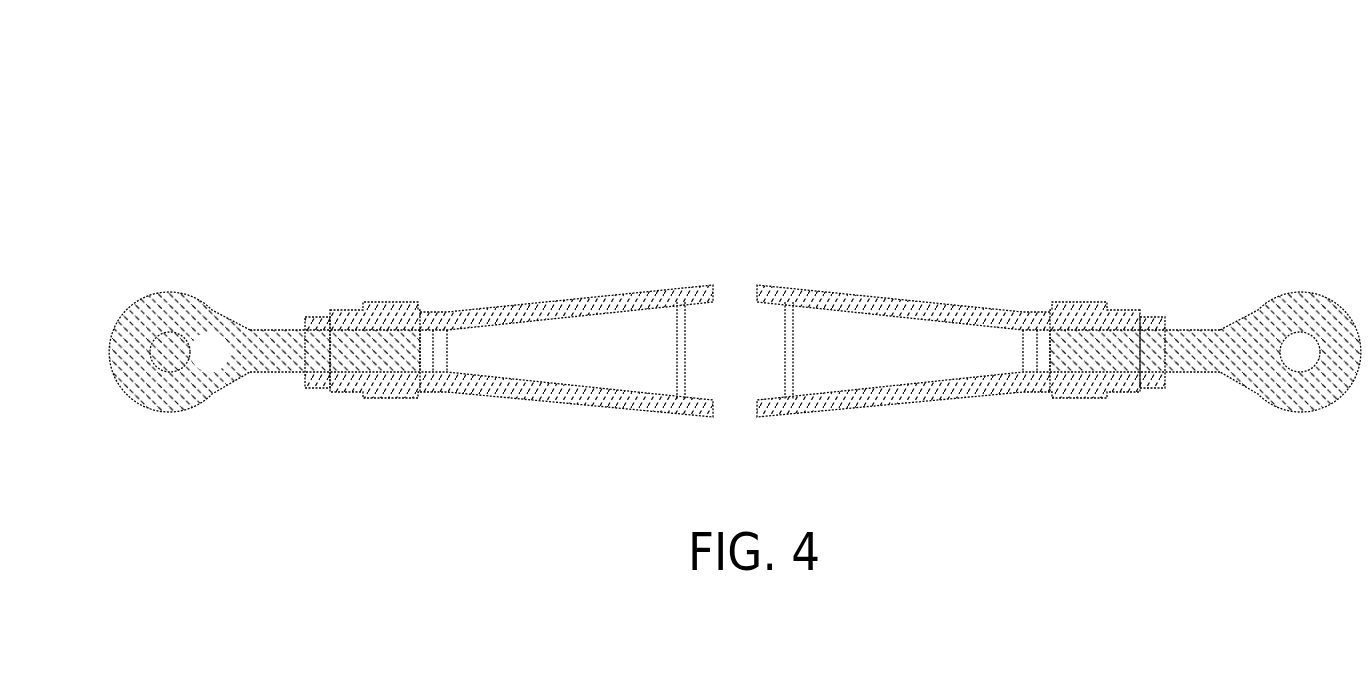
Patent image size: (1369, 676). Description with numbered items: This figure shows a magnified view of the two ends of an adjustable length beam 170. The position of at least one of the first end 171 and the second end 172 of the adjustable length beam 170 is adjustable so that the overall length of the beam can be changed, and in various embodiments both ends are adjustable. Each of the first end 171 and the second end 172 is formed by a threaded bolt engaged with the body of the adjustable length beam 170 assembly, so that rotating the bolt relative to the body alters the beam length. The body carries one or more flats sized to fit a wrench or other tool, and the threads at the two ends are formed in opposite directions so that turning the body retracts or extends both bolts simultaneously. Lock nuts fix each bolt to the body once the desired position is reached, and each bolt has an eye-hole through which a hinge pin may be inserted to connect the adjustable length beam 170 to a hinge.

The adjustable length beam 170 is at (228, 100).
The first end 171 is at (265, 232).
The second end 172 is at (1172, 233).